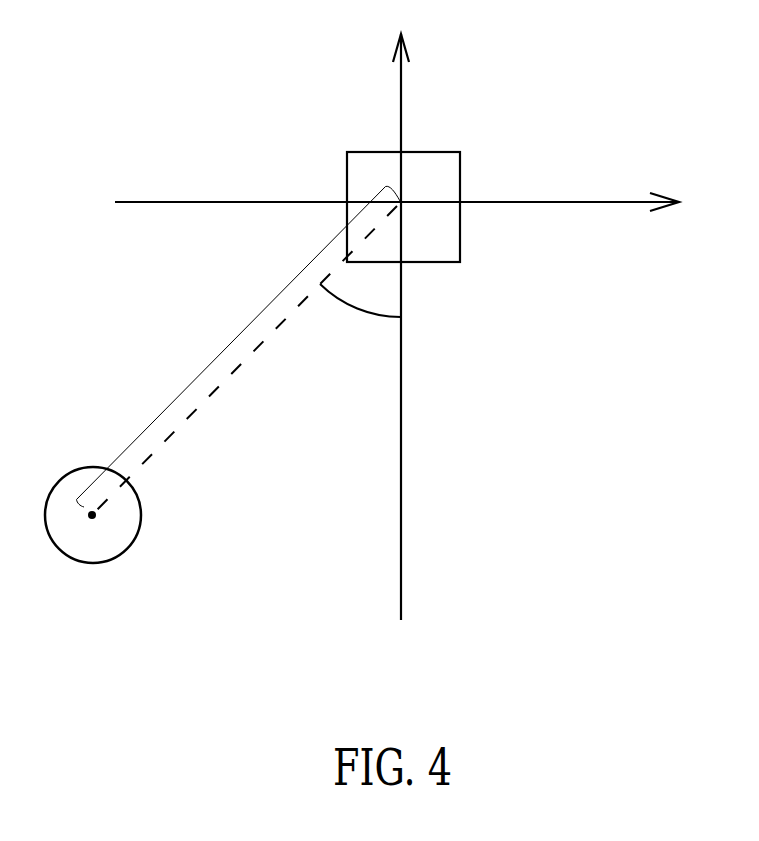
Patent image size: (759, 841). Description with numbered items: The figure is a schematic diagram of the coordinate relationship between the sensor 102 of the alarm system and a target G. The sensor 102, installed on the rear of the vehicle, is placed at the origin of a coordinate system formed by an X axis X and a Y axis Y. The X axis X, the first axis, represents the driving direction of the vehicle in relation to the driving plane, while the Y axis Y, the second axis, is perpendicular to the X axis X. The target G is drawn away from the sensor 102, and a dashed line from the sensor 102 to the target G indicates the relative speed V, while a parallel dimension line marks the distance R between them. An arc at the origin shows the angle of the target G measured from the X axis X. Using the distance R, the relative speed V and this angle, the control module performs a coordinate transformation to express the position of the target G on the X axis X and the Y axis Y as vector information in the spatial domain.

The sensor 102 is at (441, 152).
The X axis X is at (400, 310).
The Y axis Y is at (412, 210).
The relative speed V is at (246, 358).
The distance R is at (235, 336).
The target G is at (127, 553).